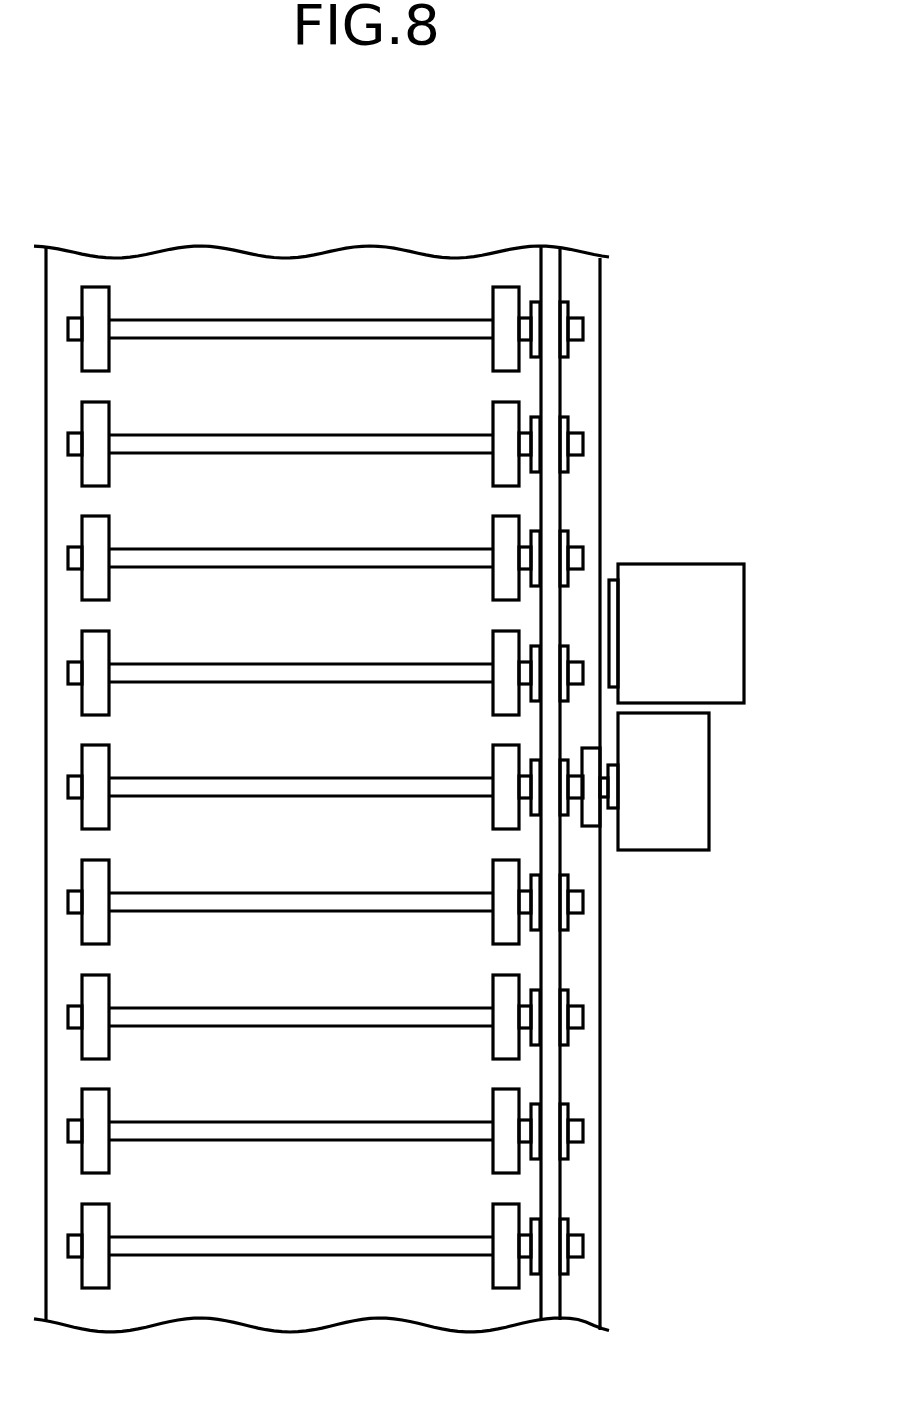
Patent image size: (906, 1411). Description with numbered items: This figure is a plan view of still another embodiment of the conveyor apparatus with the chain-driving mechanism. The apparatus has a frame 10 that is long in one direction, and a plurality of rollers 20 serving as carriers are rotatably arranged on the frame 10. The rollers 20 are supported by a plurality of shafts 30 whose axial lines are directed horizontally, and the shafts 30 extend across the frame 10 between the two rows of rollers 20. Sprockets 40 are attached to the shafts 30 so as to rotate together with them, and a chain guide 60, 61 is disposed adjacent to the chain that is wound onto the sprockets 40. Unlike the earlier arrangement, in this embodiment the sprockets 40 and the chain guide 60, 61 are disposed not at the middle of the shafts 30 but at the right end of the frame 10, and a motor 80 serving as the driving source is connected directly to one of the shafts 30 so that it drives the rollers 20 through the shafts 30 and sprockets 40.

The frame 10 is at (608, 430).
The roller 20 is at (100, 287).
The shaft 30 is at (307, 319).
The sprocket 40 is at (560, 303).
The chain guide 60 is at (679, 794).
The chain guide 61 is at (562, 390).
The motor 80 is at (709, 563).